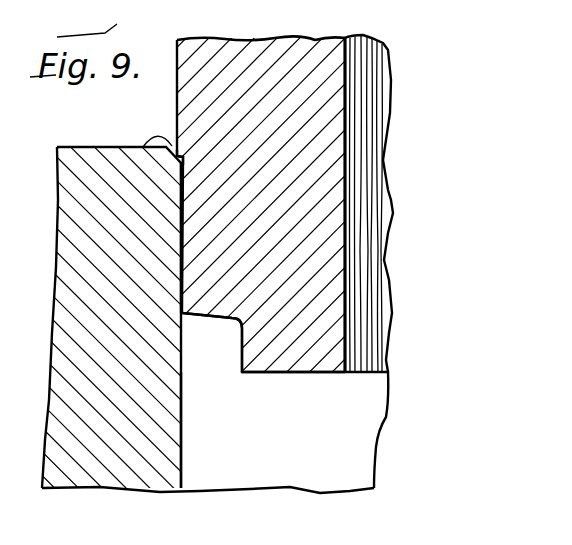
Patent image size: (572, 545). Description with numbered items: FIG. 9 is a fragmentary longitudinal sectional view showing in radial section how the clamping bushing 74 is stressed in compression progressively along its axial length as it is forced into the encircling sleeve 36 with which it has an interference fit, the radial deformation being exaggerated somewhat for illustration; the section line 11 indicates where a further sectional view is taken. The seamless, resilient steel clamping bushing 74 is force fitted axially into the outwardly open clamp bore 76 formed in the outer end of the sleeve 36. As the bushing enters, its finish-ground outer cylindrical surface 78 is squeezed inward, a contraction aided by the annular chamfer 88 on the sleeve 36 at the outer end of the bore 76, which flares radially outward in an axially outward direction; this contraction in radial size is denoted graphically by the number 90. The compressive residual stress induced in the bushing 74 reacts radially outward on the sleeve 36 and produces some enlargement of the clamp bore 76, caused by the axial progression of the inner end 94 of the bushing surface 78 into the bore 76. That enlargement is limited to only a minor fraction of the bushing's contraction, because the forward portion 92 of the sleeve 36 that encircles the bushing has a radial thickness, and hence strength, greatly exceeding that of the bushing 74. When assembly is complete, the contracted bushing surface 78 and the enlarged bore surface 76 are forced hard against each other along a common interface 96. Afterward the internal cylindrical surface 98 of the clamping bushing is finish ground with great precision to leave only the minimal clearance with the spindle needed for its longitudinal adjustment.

The section line 11- 11 is at (167, 116).
The sleeve 36 is at (80, 477).
The clamping bushing 74 is at (275, 40).
The clamp bore 76 is at (178, 455).
The outer cylindrical surface 78 is at (177, 48).
The annular chamfer 88 is at (141, 148).
The contraction in radial size 90 is at (184, 156).
The forward portion of the sleeve 92 is at (82, 361).
The inner end of the bushing surface 94 is at (185, 317).
The common interface 96 is at (181, 250).
The internal cylindrical surface 98 is at (366, 375).